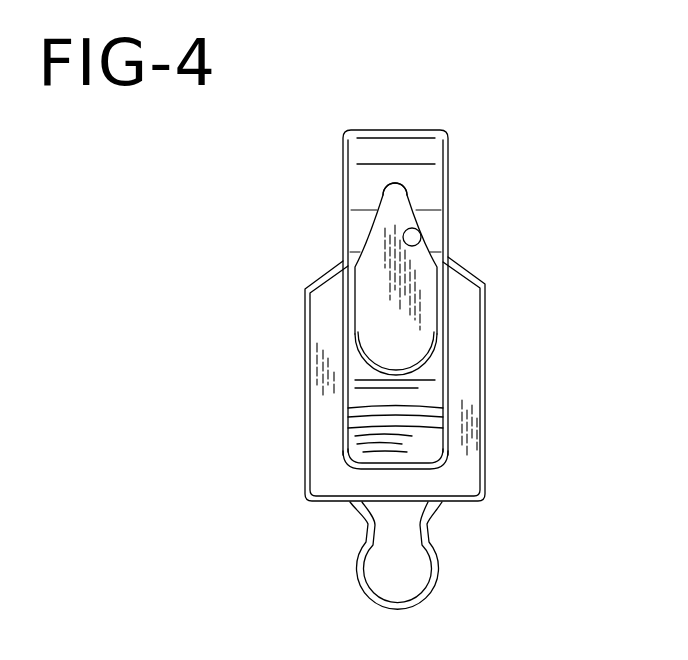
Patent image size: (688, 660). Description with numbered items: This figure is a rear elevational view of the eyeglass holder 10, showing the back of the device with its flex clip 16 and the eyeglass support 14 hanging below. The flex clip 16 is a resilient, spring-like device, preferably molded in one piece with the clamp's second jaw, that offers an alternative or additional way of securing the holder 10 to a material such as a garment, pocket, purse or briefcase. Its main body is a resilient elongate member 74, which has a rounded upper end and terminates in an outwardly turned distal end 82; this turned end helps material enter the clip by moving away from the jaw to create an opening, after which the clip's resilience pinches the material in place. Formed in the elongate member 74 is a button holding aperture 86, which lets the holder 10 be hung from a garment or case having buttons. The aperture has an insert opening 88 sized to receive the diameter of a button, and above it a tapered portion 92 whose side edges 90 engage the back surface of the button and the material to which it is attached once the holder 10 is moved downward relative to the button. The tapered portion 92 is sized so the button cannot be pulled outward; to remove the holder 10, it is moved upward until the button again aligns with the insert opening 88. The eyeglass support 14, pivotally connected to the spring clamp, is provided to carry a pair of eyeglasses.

The eyeglass holder 10 is at (152, 188).
The eyeglass support 14 is at (362, 575).
The flex clip 16 is at (437, 170).
The resilient elongate member 74 is at (358, 221).
The outwardly turned distal end 82 is at (408, 445).
The button holding aperture 86 is at (427, 307).
The insert opening 88 is at (372, 334).
The side edges 90 is at (420, 250).
The tapered portion 92 is at (394, 192).